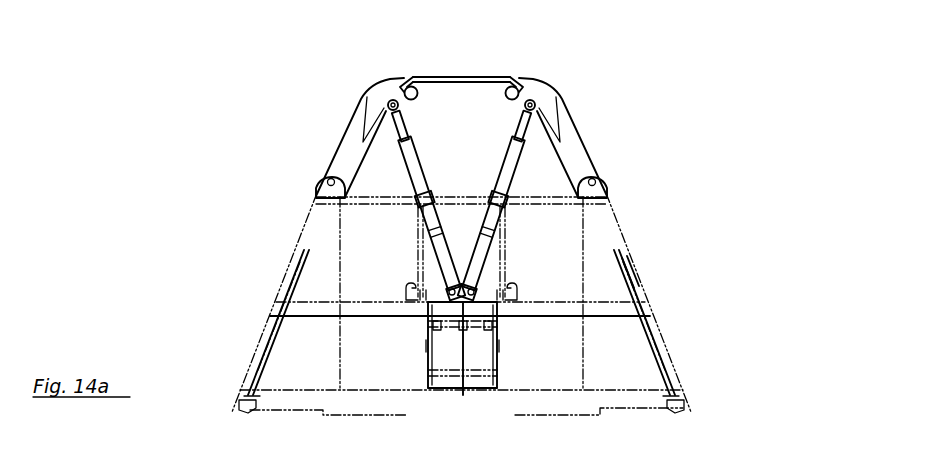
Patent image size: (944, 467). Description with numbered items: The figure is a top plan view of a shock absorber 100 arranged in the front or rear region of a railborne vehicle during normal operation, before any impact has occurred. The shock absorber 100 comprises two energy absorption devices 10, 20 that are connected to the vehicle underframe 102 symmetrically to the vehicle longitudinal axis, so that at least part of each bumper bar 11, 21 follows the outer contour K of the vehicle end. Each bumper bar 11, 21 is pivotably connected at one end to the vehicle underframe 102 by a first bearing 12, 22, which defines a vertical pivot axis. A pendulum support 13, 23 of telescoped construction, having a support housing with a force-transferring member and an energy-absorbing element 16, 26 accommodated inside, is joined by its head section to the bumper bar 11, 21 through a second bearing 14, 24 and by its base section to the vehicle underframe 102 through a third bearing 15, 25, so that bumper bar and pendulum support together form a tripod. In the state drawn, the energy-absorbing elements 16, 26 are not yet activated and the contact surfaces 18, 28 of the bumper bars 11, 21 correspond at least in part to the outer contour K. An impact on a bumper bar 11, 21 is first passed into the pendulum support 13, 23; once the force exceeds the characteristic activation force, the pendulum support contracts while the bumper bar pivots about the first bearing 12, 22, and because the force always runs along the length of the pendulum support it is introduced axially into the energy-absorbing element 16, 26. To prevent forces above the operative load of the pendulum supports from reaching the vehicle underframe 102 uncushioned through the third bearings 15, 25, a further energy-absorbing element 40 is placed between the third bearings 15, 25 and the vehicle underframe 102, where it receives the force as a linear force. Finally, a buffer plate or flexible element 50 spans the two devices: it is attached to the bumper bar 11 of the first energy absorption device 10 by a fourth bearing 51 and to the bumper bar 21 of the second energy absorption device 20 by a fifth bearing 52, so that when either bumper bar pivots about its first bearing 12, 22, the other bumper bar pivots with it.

The shock absorber 100 is at (851, 206).
The first energy absorption device 10 is at (395, 250).
The second energy absorption device 20 is at (565, 250).
The bumper bar 11 is at (313, 152).
The first bearing 12 is at (300, 171).
The pendulum support 13 is at (337, 200).
The second bearing 14 is at (322, 84).
The third bearing 15 is at (339, 252).
The energy-absorbing element 16 is at (342, 147).
The contact surface 18 is at (315, 110).
The bumper bar 21 is at (617, 153).
The first bearing 22 is at (630, 176).
The pendulum support 23 is at (593, 198).
The second bearing 24 is at (609, 84).
The third bearing 25 is at (599, 249).
The energy-absorbing element 26 is at (591, 141).
The contact surface 28 is at (611, 112).
The further energy-absorbing element 40 is at (503, 392).
The buffer plate or flexible element 50 is at (447, 57).
The fourth bearing 51 is at (380, 65).
The fifth bearing 52 is at (558, 68).
The vehicle underframe 102 is at (250, 320).
The outer contour K is at (673, 264).